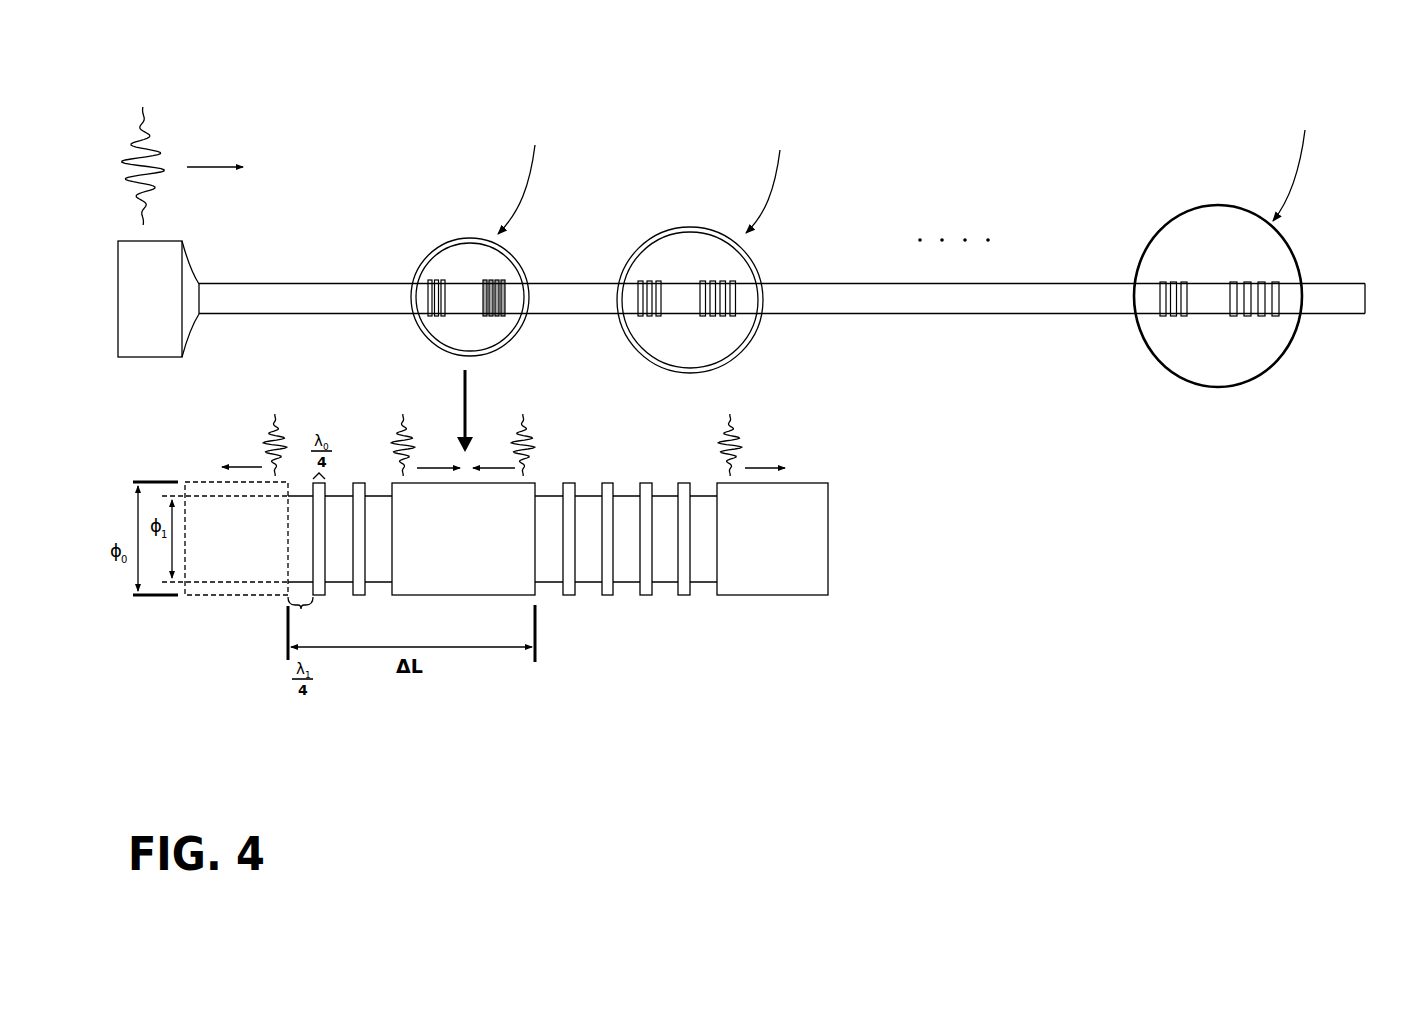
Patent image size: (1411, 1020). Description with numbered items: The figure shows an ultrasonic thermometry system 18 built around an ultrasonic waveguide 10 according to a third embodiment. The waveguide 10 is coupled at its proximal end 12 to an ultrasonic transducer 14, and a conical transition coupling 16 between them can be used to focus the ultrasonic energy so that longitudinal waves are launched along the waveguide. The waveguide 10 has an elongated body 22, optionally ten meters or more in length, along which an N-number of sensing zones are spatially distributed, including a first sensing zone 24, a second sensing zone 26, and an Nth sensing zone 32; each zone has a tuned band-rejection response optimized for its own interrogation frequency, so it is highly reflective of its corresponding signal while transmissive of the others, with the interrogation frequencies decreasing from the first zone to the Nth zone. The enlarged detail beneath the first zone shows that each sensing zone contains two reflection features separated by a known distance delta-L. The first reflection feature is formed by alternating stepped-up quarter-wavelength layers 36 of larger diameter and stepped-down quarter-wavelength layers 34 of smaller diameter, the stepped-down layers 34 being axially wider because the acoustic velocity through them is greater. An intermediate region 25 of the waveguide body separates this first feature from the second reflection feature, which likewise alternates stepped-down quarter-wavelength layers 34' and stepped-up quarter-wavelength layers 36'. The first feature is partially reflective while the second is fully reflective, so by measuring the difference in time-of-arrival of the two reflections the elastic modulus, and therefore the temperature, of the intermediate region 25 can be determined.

The ultrasonic thermometry system 18 is at (638, 70).
The ultrasonic transducer 14 is at (118, 275).
The proximal end 12 is at (199, 284).
The conical transition coupling 16 is at (190, 333).
The ultrasonic waveguide 10 is at (806, 283).
The elongated body 22 is at (883, 309).
The first sensing zone 24 is at (520, 258).
The second sensing zone 26 is at (720, 233).
The Nth sensing zone 32 is at (1192, 212).
The intermediate region 25 is at (455, 561).
The stepped-up quarter-wavelength layers 36 is at (342, 498).
The stepped-down quarter-wavelength layers 34 is at (348, 566).
The stepped-down quarter-wavelength layers of second reflection feature 34' is at (626, 495).
The stepped-up quarter-wavelength layers of second reflection feature 36' is at (626, 581).